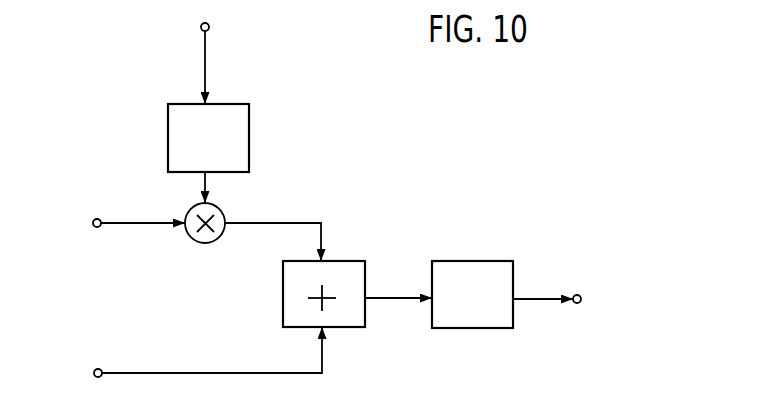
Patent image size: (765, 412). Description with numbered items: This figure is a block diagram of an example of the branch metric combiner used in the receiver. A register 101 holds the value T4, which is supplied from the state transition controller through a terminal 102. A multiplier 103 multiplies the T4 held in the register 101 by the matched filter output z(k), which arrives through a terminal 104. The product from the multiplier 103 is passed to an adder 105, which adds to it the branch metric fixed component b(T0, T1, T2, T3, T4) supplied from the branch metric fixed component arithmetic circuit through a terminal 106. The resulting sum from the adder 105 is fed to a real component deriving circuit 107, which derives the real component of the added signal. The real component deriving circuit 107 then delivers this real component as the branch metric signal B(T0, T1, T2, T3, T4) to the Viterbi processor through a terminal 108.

The register 101 is at (250, 137).
The terminal 102 is at (210, 25).
The multiplier 103 is at (203, 246).
The terminal 104 is at (93, 223).
The adder 105 is at (340, 258).
The terminal 106 is at (94, 373).
The real component deriving circuit 107 is at (485, 258).
The terminal 108 is at (581, 298).